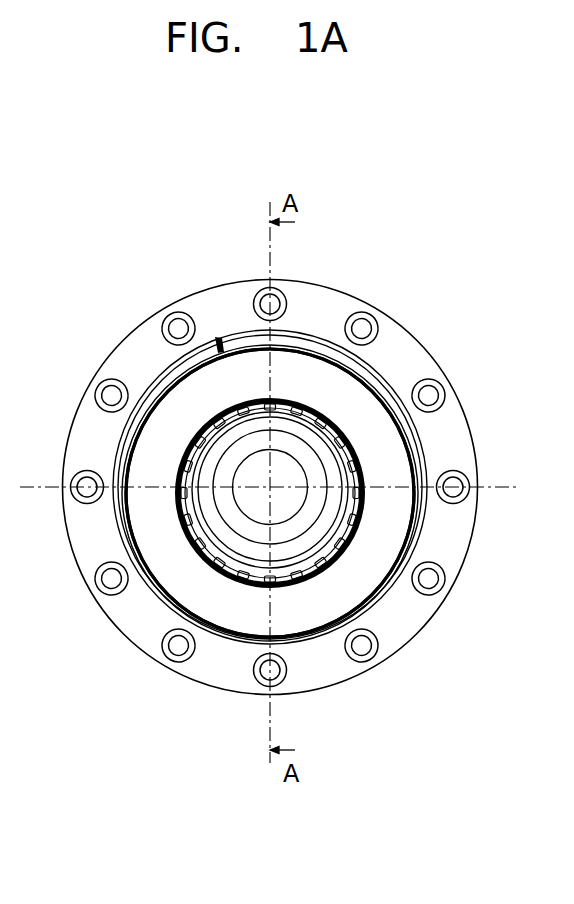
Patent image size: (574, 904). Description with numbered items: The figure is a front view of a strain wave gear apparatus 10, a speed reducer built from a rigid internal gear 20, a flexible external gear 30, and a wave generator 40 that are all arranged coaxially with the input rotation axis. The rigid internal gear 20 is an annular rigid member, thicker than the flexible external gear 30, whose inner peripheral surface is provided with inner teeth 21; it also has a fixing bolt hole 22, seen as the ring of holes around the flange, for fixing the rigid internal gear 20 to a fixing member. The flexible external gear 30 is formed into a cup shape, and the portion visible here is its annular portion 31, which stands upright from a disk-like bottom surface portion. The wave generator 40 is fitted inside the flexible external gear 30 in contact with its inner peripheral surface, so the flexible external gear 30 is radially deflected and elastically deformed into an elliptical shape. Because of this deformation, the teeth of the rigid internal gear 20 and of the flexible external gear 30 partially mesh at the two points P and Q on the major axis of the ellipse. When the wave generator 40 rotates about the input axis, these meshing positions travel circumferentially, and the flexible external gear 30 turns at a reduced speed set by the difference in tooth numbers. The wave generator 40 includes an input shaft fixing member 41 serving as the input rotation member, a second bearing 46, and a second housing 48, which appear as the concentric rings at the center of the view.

The strain wave gear apparatus 10 is at (360, 142).
The rigid internal gear 20 is at (280, 458).
The inner teeth 21 is at (360, 353).
The fixing bolt hole 22 is at (432, 583).
The flexible external gear 30 is at (373, 378).
The annular portion 31 is at (392, 387).
The wave generator 40 is at (218, 348).
The input shaft fixing member 41 is at (178, 410).
The second bearing 46 is at (226, 470).
The second housing 48 is at (158, 382).